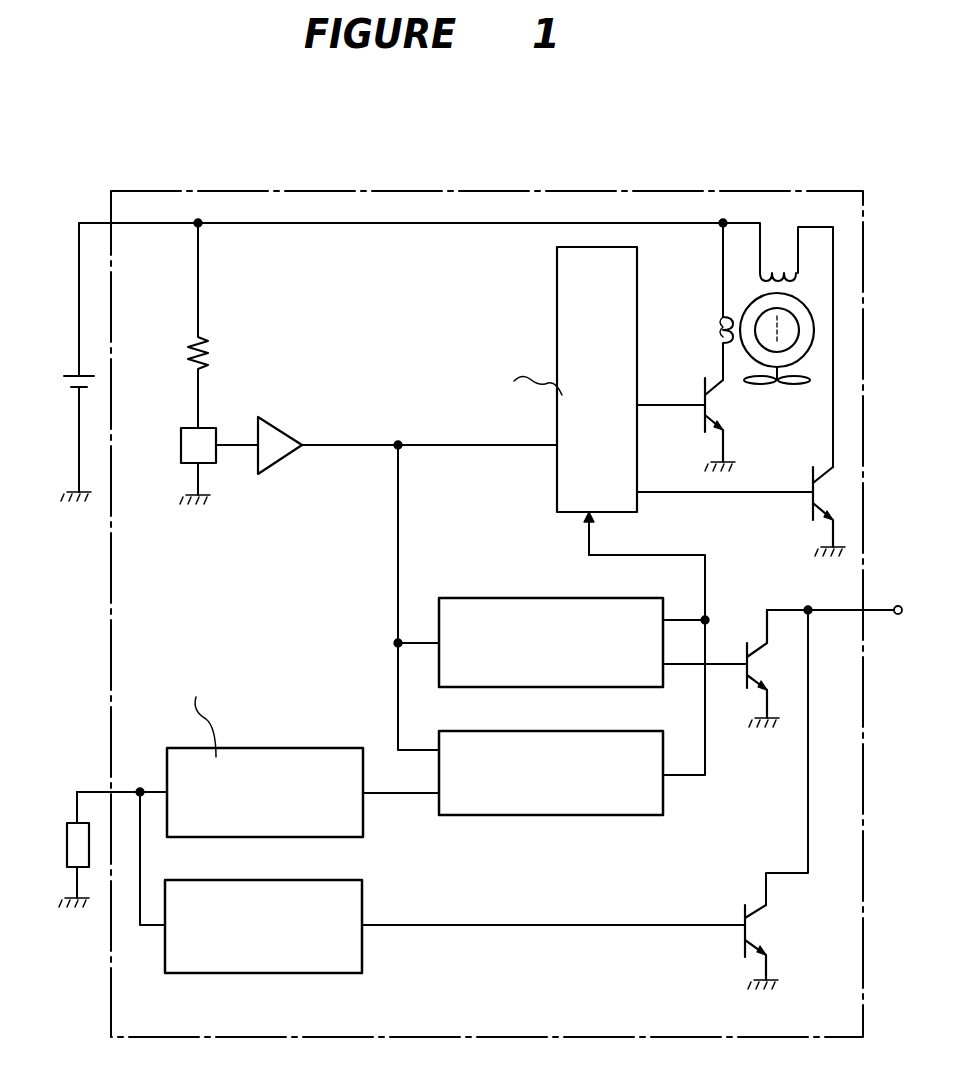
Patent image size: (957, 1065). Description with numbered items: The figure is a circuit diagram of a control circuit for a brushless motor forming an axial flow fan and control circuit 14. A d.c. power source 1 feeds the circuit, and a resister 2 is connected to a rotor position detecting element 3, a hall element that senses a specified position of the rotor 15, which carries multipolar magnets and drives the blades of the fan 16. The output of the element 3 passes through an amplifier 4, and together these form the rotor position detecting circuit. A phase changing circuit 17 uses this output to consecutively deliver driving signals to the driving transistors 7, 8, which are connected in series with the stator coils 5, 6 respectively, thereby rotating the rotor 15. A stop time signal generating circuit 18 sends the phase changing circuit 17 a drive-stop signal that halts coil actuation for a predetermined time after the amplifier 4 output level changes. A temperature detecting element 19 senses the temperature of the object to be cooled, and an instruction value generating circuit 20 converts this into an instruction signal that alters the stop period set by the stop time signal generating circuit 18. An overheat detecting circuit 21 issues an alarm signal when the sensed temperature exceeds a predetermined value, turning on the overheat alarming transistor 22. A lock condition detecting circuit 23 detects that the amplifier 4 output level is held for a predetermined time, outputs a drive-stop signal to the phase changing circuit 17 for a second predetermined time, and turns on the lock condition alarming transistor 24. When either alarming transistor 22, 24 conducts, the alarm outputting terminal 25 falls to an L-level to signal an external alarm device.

The d.c. power source 1 is at (93, 385).
The resister 2 is at (209, 352).
The rotor position detecting element 3 is at (204, 427).
The amplifier 4 is at (288, 435).
The stator coil 5 is at (720, 319).
The stator coil 6 is at (779, 273).
The driving transistor 7 is at (712, 411).
The driving transistor 8 is at (826, 487).
The axial flow fan and control circuit 14 is at (526, 191).
The rotor 15 is at (814, 327).
The blades of the fan 16 is at (788, 385).
The phase changing circuit 17 is at (557, 321).
The stop time signal generating circuit 18 is at (497, 815).
The temperature detecting element 19 is at (71, 823).
The instruction value generating circuit 20 is at (266, 748).
The overheat detecting circuit 21 is at (262, 973).
The overheat alarming transistor 22 is at (756, 928).
The lock condition detecting circuit 23 is at (512, 596).
The lock condition alarming transistor 24 is at (752, 663).
The alarm outputting terminal 25 is at (896, 606).